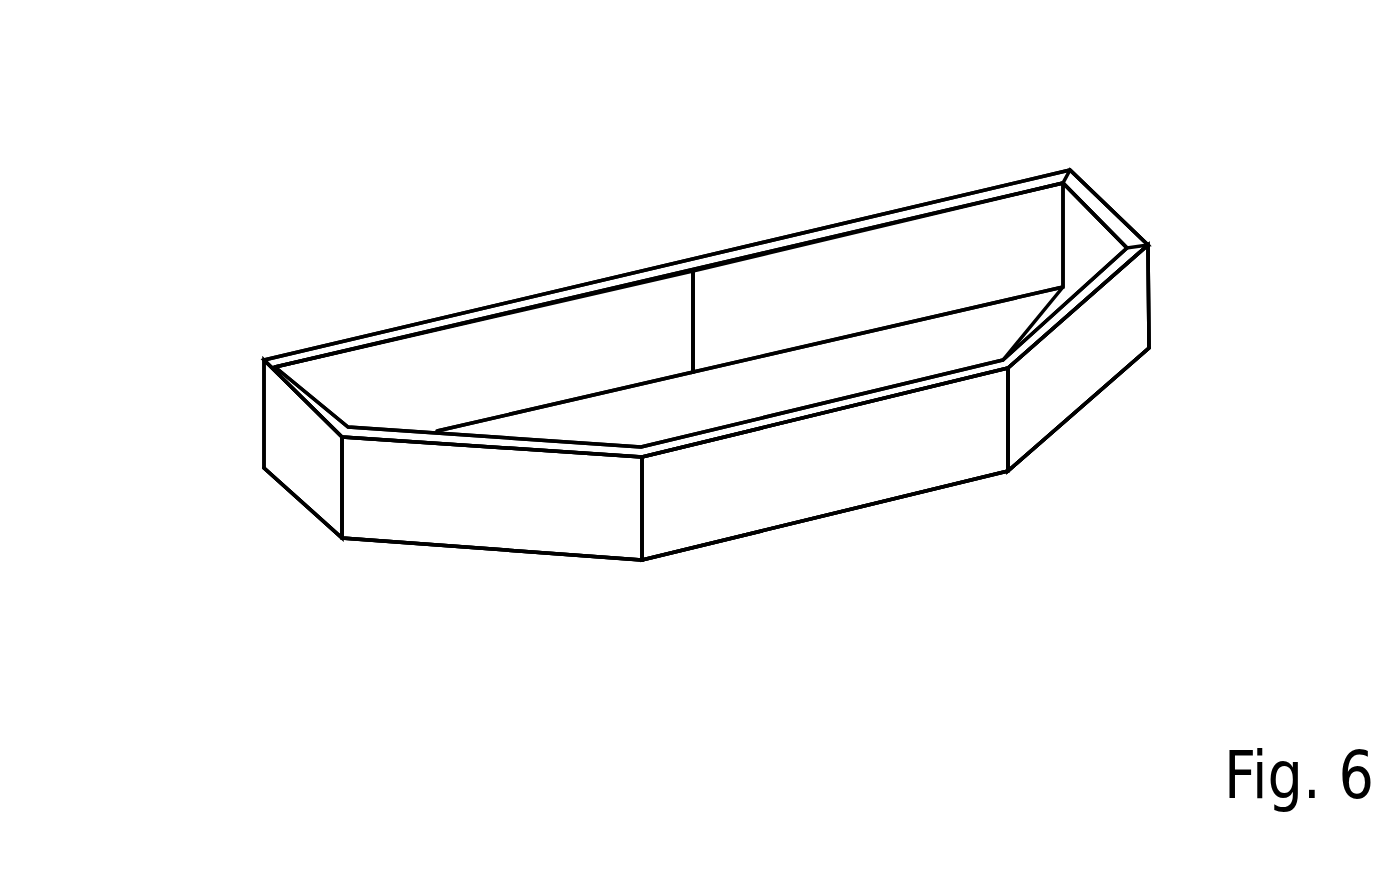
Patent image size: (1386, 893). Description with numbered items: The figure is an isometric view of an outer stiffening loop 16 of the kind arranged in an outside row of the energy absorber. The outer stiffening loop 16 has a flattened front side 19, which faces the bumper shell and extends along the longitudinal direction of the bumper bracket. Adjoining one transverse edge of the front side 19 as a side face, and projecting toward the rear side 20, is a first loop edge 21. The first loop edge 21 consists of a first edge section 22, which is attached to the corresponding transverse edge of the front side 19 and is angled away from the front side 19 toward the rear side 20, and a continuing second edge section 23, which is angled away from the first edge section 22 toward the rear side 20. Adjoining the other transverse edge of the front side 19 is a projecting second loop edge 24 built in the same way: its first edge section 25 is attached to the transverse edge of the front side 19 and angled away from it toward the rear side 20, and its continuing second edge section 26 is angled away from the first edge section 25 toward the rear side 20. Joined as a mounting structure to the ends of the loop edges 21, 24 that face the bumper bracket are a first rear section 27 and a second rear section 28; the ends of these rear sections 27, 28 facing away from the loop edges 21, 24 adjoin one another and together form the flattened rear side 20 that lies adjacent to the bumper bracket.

The outer stiffening loop 16 is at (327, 232).
The front side 19 is at (835, 468).
The rear side 20 is at (335, 328).
The first loop edge 21 is at (341, 573).
The first edge section 22 is at (473, 502).
The second edge section 23 is at (297, 448).
The second loop edge 24 is at (1183, 332).
The first edge section 25 is at (1088, 357).
The second edge section 26 is at (1110, 203).
The first rear section 27 is at (562, 352).
The second rear section 28 is at (912, 275).